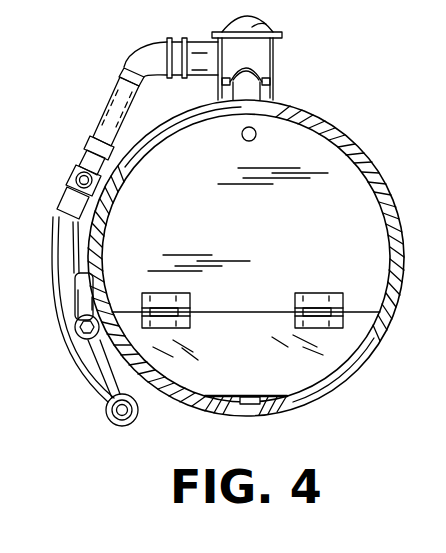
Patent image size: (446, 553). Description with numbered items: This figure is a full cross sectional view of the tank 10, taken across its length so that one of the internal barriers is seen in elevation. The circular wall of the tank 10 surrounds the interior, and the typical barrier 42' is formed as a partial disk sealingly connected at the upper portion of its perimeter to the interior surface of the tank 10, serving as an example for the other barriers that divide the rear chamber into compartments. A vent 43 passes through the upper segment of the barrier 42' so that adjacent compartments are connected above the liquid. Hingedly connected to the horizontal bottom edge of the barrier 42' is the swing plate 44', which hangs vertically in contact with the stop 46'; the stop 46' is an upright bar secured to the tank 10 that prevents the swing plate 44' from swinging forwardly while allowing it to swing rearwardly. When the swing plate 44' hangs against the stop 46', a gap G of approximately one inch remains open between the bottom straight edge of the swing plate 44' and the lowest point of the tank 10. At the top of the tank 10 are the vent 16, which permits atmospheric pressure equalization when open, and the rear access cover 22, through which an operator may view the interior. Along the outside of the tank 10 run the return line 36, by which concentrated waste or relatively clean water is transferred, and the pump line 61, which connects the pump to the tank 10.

The tank 10 is at (311, 94).
The vent 16 is at (270, 27).
The rear access cover 22 is at (254, 74).
The return line 36 is at (75, 320).
The barrier 42' is at (242, 248).
The inspection hole 43 is at (242, 137).
The swing plate 44' is at (238, 365).
The stop 46' is at (255, 386).
The pump line 61 is at (106, 414).
The gap G is at (233, 400).